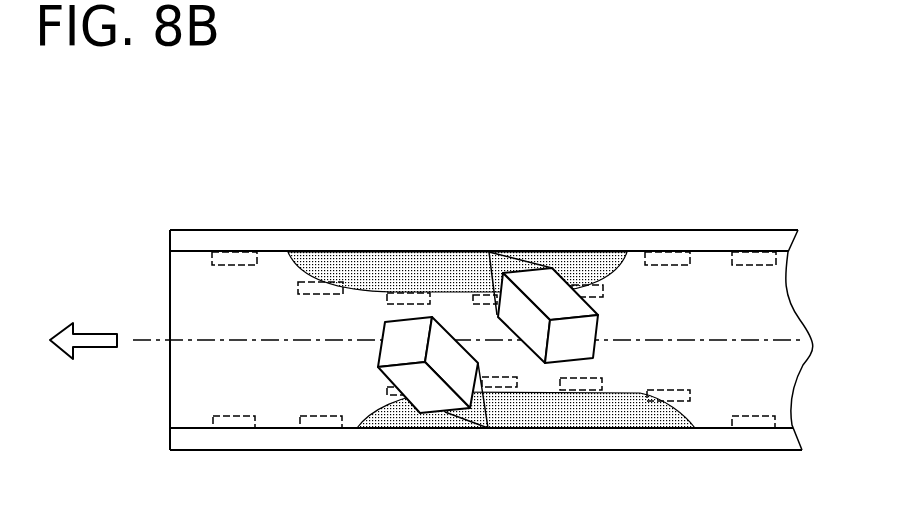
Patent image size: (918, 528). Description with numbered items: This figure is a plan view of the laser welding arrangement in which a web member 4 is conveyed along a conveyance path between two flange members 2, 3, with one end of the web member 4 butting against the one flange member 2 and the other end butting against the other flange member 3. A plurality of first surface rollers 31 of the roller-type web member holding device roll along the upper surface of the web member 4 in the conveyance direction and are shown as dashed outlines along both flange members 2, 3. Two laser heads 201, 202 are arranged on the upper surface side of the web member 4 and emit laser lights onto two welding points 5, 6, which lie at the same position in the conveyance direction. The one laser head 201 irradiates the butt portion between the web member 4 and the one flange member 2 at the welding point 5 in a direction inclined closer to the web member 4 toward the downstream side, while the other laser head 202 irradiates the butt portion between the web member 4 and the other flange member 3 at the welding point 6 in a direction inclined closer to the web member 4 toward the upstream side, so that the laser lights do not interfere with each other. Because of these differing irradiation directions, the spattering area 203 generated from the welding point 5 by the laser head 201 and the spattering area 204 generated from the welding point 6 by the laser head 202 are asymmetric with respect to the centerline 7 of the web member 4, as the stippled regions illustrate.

The flange member 2 is at (655, 230).
The flange member 3 is at (717, 450).
The web member 4 is at (743, 281).
The welding point 5 is at (489, 252).
The welding point 6 is at (488, 428).
The centerline 7 is at (162, 340).
The first surface rollers 31 is at (232, 252).
The laser head 201 is at (578, 310).
The laser head 202 is at (410, 377).
The spattering area 203 is at (351, 259).
The spattering area 204 is at (625, 417).